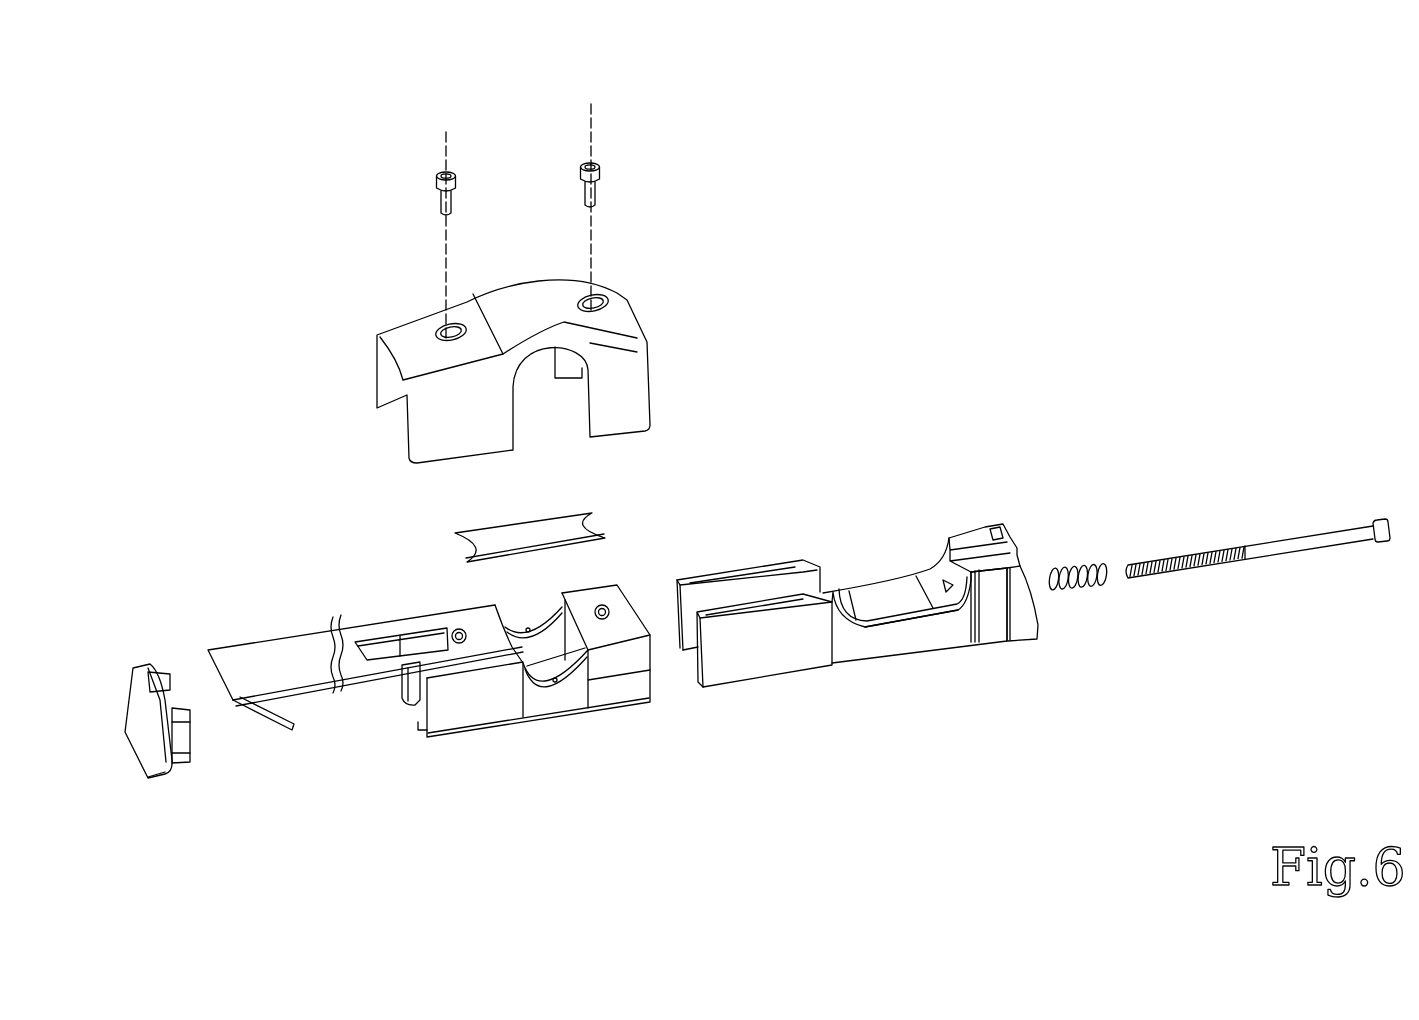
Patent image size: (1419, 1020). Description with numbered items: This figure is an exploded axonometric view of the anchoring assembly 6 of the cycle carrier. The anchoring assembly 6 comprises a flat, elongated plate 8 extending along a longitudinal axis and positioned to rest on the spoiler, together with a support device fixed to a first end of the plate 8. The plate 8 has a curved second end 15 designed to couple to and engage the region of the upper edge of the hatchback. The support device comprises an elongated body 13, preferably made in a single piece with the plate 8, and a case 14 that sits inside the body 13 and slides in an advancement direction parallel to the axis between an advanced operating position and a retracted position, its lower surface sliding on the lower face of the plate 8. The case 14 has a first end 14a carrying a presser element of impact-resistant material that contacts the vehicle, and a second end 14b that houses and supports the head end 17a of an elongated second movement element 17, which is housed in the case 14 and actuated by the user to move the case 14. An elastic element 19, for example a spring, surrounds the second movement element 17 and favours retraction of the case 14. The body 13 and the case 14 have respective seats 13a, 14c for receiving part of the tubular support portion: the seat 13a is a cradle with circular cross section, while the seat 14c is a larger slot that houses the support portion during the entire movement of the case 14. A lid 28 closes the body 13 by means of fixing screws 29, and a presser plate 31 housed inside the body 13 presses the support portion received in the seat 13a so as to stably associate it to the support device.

The anchoring assembly 6 is at (880, 384).
The plate 8 is at (365, 696).
The elongated body 13 is at (525, 727).
The seat 13a is at (573, 670).
The case 14 is at (891, 666).
The first end 14a is at (130, 741).
The second end 14b is at (1035, 612).
The seat 14c is at (877, 618).
The second end 15 is at (284, 704).
The second movement element 17 is at (1260, 570).
The head end 17a is at (1392, 520).
The elastic element 19 is at (1098, 565).
The lid 28 is at (408, 348).
The fixing screws 29 is at (587, 203).
The presser plate 31 is at (507, 542).